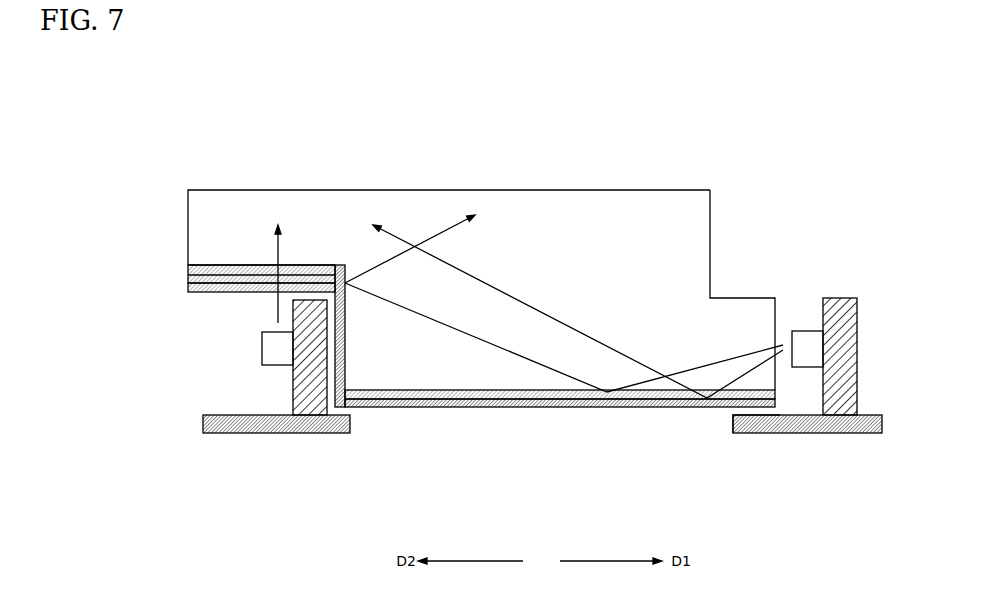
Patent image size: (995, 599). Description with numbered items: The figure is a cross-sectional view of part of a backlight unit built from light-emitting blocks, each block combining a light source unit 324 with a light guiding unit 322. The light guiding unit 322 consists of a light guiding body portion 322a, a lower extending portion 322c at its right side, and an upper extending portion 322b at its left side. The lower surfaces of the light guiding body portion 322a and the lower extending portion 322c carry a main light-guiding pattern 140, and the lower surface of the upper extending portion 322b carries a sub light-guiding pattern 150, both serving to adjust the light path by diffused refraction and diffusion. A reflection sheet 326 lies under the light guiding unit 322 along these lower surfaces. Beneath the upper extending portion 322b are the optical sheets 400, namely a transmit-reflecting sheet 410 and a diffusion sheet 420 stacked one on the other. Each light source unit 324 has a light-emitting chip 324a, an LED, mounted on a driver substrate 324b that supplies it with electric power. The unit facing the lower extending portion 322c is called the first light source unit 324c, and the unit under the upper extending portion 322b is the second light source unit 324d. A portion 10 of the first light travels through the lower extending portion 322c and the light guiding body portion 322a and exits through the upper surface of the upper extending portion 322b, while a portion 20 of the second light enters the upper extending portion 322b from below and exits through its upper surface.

The light guiding unit 322 is at (481, 234).
The light guiding body portion 322a is at (508, 212).
The upper extending portion 322b is at (257, 212).
The lower extending portion 322c is at (742, 254).
The sub light-guiding pattern 150 is at (215, 266).
The optical sheets 400 is at (222, 322).
The transmit-reflecting sheet 410 is at (232, 276).
The diffusion sheet 420 is at (255, 287).
The reflection sheet 326 is at (529, 407).
The main light-guiding pattern 140 is at (466, 407).
The portion of the first light 10 is at (564, 306).
The portion of the second light 20 is at (277, 286).
The second light source unit 324d is at (348, 440).
The light source unit 324 is at (758, 417).
The light-emitting chip 324a is at (855, 390).
The driver substrate 324b is at (817, 433).
The first light source unit 324c is at (725, 440).